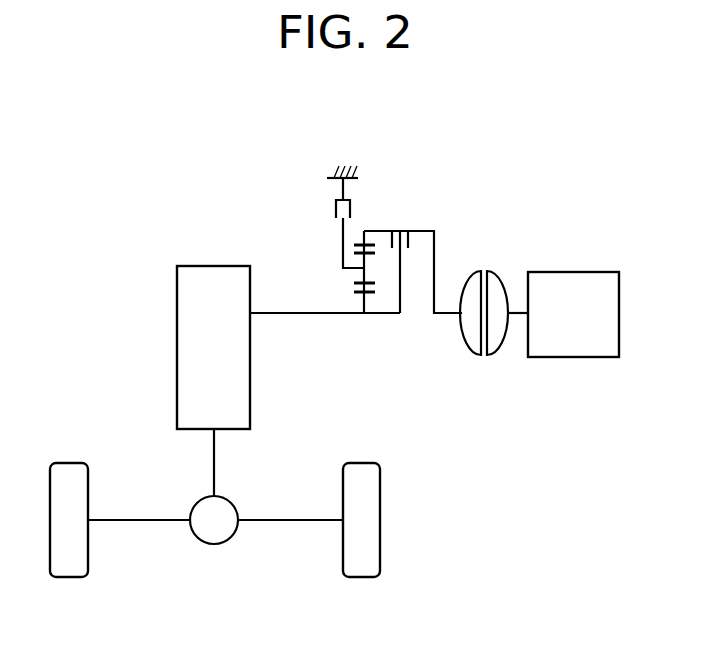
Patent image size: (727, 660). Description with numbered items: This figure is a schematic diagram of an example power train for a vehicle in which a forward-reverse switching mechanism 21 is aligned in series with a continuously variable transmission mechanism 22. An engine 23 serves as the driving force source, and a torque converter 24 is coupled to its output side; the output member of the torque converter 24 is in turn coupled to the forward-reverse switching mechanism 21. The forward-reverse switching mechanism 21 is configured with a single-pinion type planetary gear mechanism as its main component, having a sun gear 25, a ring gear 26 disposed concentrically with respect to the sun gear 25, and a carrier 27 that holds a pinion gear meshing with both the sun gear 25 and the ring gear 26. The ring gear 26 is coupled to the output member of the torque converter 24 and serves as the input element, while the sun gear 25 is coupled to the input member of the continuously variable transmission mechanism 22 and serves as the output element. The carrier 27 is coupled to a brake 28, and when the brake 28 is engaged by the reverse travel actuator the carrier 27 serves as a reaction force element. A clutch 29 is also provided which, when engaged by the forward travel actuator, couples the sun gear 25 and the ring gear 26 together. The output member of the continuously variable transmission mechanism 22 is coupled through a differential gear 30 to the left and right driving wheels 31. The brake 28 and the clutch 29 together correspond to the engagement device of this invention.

The forward-reverse switching mechanism 21 is at (359, 243).
The continuously variable transmission mechanism 22 is at (177, 292).
The engine 23 is at (582, 272).
The torque converter 24 is at (498, 261).
The sun gear 25 is at (362, 296).
The ring gear 26 is at (378, 233).
The carrier 27 is at (343, 270).
The brake 28 is at (337, 208).
The clutch 29 is at (410, 250).
The differential gear 30 is at (213, 545).
The driving wheels 31 is at (70, 463).